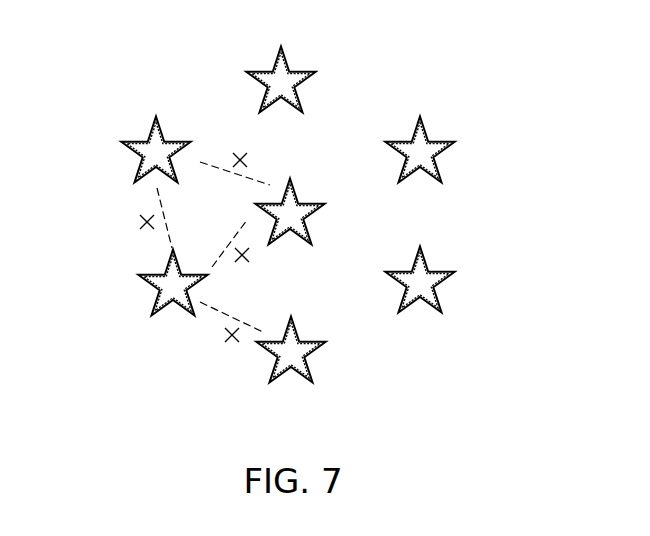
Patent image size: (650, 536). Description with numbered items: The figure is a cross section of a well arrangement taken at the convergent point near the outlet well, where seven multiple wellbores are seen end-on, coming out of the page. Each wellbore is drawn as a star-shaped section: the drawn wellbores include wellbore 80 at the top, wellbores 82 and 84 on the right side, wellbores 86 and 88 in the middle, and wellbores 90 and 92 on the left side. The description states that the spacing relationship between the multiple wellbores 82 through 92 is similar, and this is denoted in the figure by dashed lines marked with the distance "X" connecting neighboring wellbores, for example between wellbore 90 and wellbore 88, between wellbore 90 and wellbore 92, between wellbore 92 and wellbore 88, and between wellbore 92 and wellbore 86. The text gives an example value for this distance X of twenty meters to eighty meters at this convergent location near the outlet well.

The star object 80 is at (300, 73).
The wellbore 82 is at (440, 142).
The wellbore 84 is at (440, 272).
The wellbore 86 is at (310, 344).
The wellbore 88 is at (310, 205).
The wellbore 90 is at (138, 142).
The wellbore 92 is at (144, 279).